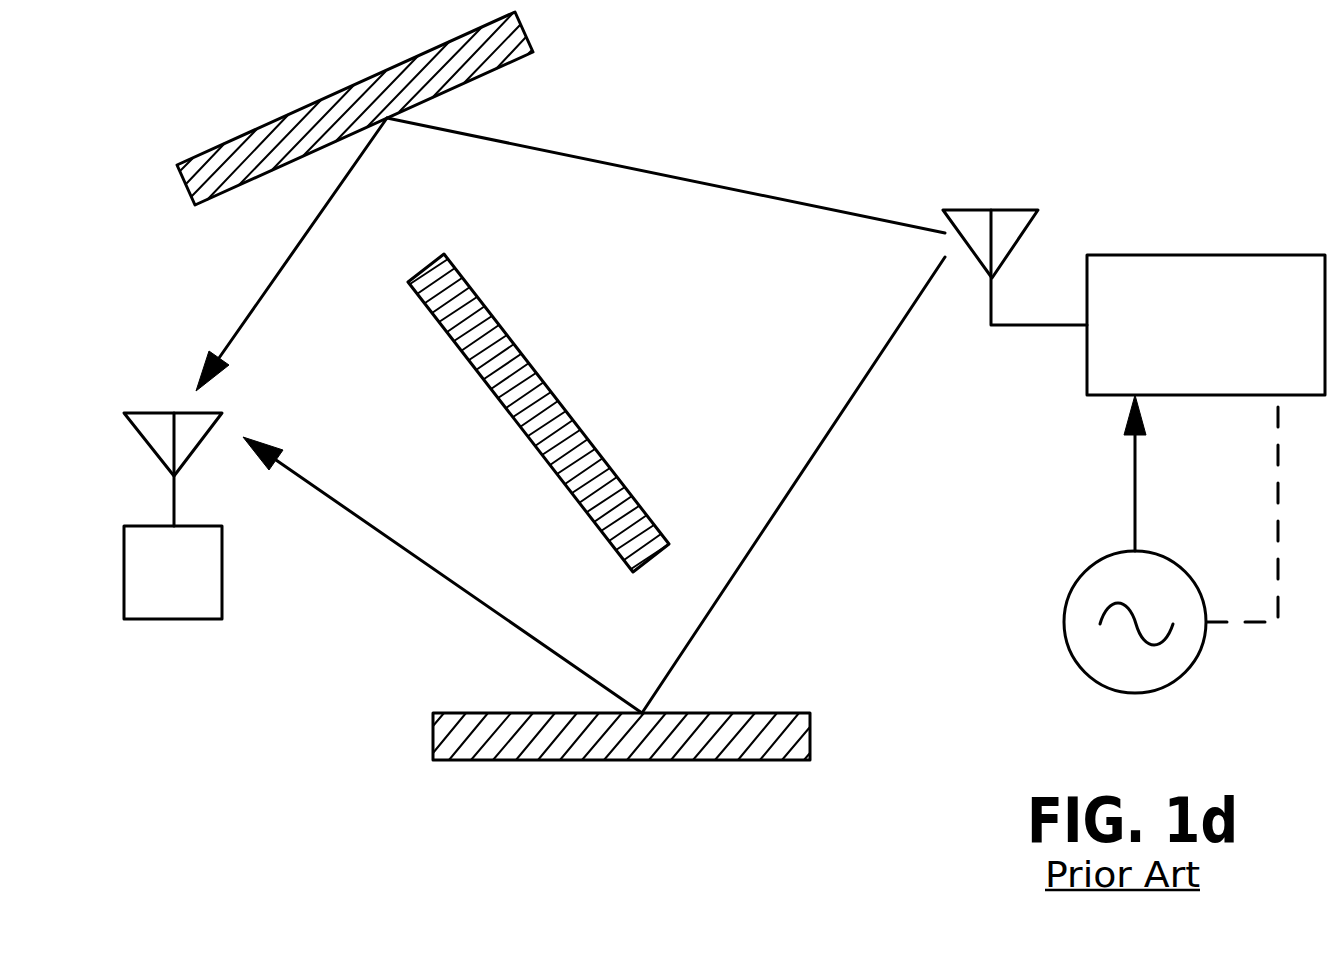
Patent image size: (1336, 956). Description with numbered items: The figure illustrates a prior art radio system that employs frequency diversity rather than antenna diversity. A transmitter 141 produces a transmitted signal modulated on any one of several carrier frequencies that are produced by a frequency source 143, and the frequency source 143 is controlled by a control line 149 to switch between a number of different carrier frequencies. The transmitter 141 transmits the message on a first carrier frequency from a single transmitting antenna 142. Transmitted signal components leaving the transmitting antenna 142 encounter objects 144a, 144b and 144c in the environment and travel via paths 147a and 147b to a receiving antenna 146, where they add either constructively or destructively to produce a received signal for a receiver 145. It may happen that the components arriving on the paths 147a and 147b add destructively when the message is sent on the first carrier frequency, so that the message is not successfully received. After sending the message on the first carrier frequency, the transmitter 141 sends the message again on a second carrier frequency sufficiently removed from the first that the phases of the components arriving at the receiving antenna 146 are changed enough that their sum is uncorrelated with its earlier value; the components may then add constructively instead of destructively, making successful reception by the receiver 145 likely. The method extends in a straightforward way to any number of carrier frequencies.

The transmitter 141 is at (1278, 255).
The transmitting antenna 142 is at (1015, 208).
The frequency source 143 is at (1063, 622).
The object 144a is at (340, 90).
The object 144b is at (572, 442).
The object 144c is at (573, 762).
The receiver 145 is at (124, 595).
The receiving antenna 146 is at (148, 437).
The path 147a is at (242, 327).
The path 147b is at (363, 528).
The control line 149 is at (1278, 630).